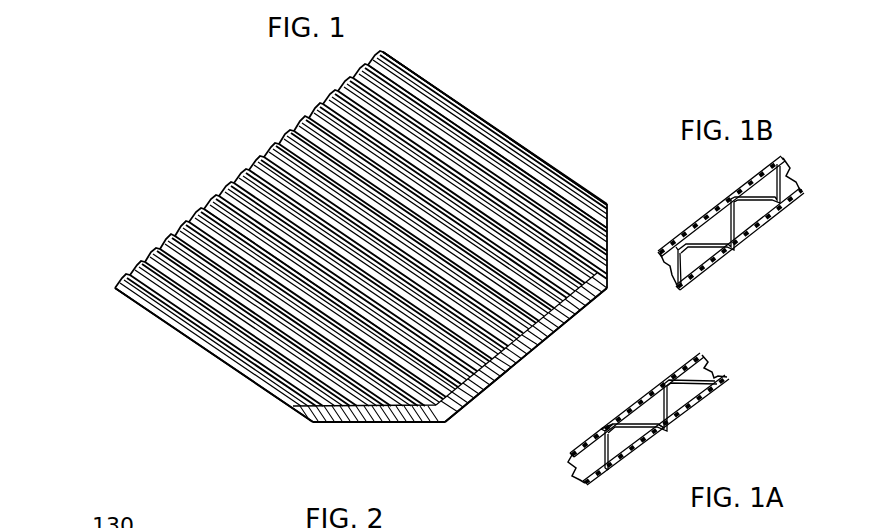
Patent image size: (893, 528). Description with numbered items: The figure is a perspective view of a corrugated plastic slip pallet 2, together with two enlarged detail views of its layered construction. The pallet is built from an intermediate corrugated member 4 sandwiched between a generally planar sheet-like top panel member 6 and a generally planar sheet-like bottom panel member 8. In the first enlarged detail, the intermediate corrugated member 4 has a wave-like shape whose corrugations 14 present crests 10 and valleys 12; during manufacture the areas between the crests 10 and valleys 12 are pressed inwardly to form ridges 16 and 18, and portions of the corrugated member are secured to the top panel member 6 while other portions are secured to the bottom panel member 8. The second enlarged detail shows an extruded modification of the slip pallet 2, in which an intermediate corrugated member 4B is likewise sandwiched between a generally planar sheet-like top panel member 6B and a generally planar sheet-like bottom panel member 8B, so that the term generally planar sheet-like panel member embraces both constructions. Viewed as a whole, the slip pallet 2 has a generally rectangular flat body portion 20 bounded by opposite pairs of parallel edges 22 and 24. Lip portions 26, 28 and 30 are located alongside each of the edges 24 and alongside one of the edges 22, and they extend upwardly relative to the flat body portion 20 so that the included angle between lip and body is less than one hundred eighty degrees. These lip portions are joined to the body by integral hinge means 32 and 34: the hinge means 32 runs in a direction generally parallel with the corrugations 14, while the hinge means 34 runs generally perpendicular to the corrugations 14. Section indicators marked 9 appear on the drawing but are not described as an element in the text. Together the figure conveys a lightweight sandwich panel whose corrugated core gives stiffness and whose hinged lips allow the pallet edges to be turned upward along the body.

In FIG. 1, the corrugated plastic slip pallet 2 is at (175, 337).
In FIG. 1A, the intermediate corrugated member 4 is at (663, 411).
In FIG. 1B, the intermediate corrugated member 4B is at (734, 195).
In FIG. 1A, the top panel member 6 is at (692, 358).
In FIG. 1B, the top panel member 6B is at (767, 162).
In FIG. 1, the bottom panel member 8 is at (519, 92).
In FIG. 1A, the bottom panel member 8 is at (697, 402).
In FIG. 1B, the bottom panel member 8B is at (763, 222).
In FIG. 1, the section line 9 is at (421, 354).
In FIG. 1B, the crests 10 is at (678, 250).
In FIG. 1A, the crests 10 is at (600, 430).
In FIG. 1B, the valleys 12 is at (730, 247).
In FIG. 1A, the valleys 12 is at (603, 472).
In FIG. 1B, the corrugations 14 is at (708, 228).
In FIG. 1A, the corrugations 14 is at (638, 400).
In FIG. 1A, the ridge 16 is at (606, 424).
In FIG. 1A, the ridge 18 is at (670, 432).
In FIG. 1, the flat body portion 20 is at (373, 239).
In FIG. 1, the edges 22 is at (200, 175).
In FIG. 1, the edges 24 is at (340, 66).
In FIG. 1, the lip portion 26 is at (247, 363).
In FIG. 1, the lip portion 28 is at (553, 180).
In FIG. 1, the lip portion 30 is at (453, 397).
In FIG. 1, the hinge means 32 is at (425, 130).
In FIG. 1, the hinge means 34 is at (487, 380).